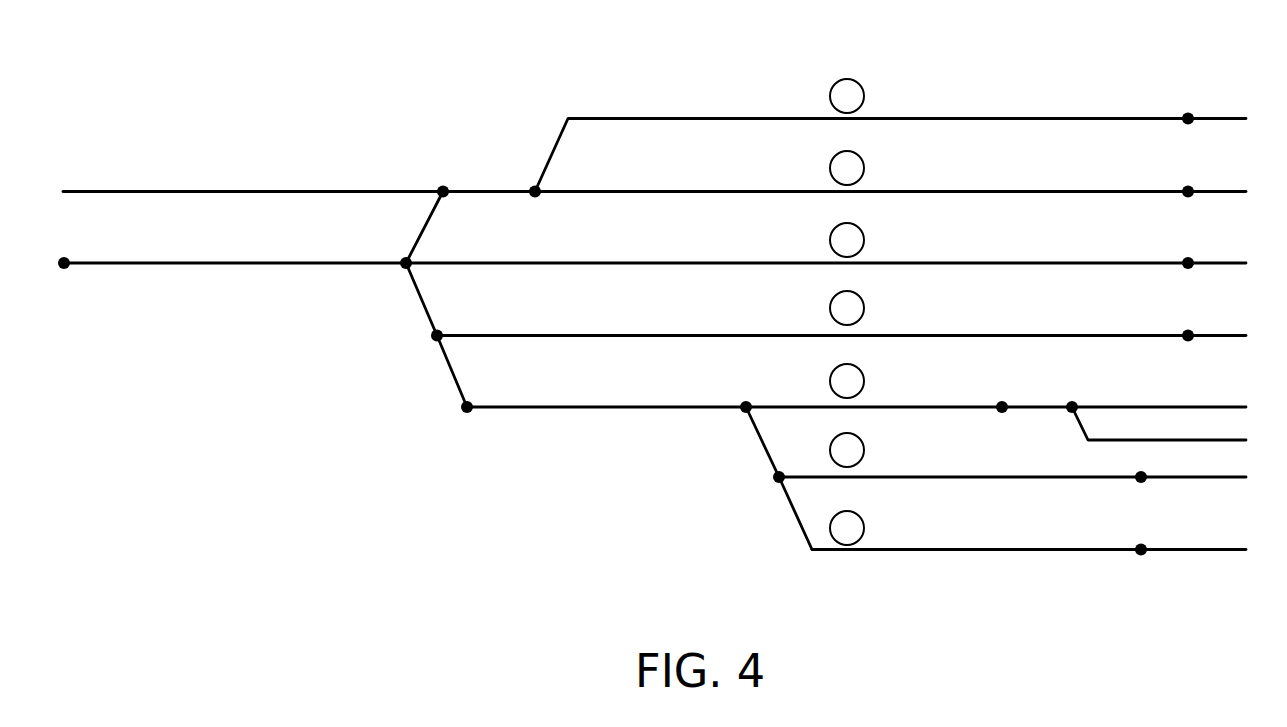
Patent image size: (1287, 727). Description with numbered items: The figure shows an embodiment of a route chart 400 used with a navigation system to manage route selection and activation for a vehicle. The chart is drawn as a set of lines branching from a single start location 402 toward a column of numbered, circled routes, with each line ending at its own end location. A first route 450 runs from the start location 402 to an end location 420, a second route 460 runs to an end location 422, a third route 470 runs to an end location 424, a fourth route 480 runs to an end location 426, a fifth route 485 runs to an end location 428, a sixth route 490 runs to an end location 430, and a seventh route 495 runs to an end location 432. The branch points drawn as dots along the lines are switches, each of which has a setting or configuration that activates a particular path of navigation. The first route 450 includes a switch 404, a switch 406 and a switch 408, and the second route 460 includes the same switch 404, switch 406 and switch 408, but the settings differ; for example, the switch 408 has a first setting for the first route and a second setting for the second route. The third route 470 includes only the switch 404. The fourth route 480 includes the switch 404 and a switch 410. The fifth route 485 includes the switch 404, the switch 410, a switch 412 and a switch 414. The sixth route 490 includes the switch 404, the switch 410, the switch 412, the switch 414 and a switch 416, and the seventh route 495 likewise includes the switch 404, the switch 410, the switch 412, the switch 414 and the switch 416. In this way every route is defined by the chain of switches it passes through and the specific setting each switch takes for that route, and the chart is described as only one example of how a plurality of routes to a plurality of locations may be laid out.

The route chart 400 is at (232, 133).
The start location 402 is at (68, 262).
The switch 404 is at (408, 262).
The switch 406 is at (443, 191).
The switch 408 is at (536, 192).
The switch 410 is at (438, 334).
The switch 412 is at (468, 406).
The switch 414 is at (745, 406).
The switch 416 is at (779, 477).
The end location 420 is at (1189, 118).
The end location 422 is at (1189, 192).
The end location 424 is at (1189, 263).
The end location 426 is at (1189, 335).
The end location 428 is at (1002, 406).
The end location 430 is at (1142, 478).
The end location 432 is at (1142, 551).
The first route 450 is at (826, 93).
The second route 460 is at (826, 166).
The third route 470 is at (826, 239).
The fourth route 480 is at (826, 306).
The fifth route 485 is at (826, 380).
The sixth route 490 is at (868, 446).
The seventh route 495 is at (868, 522).